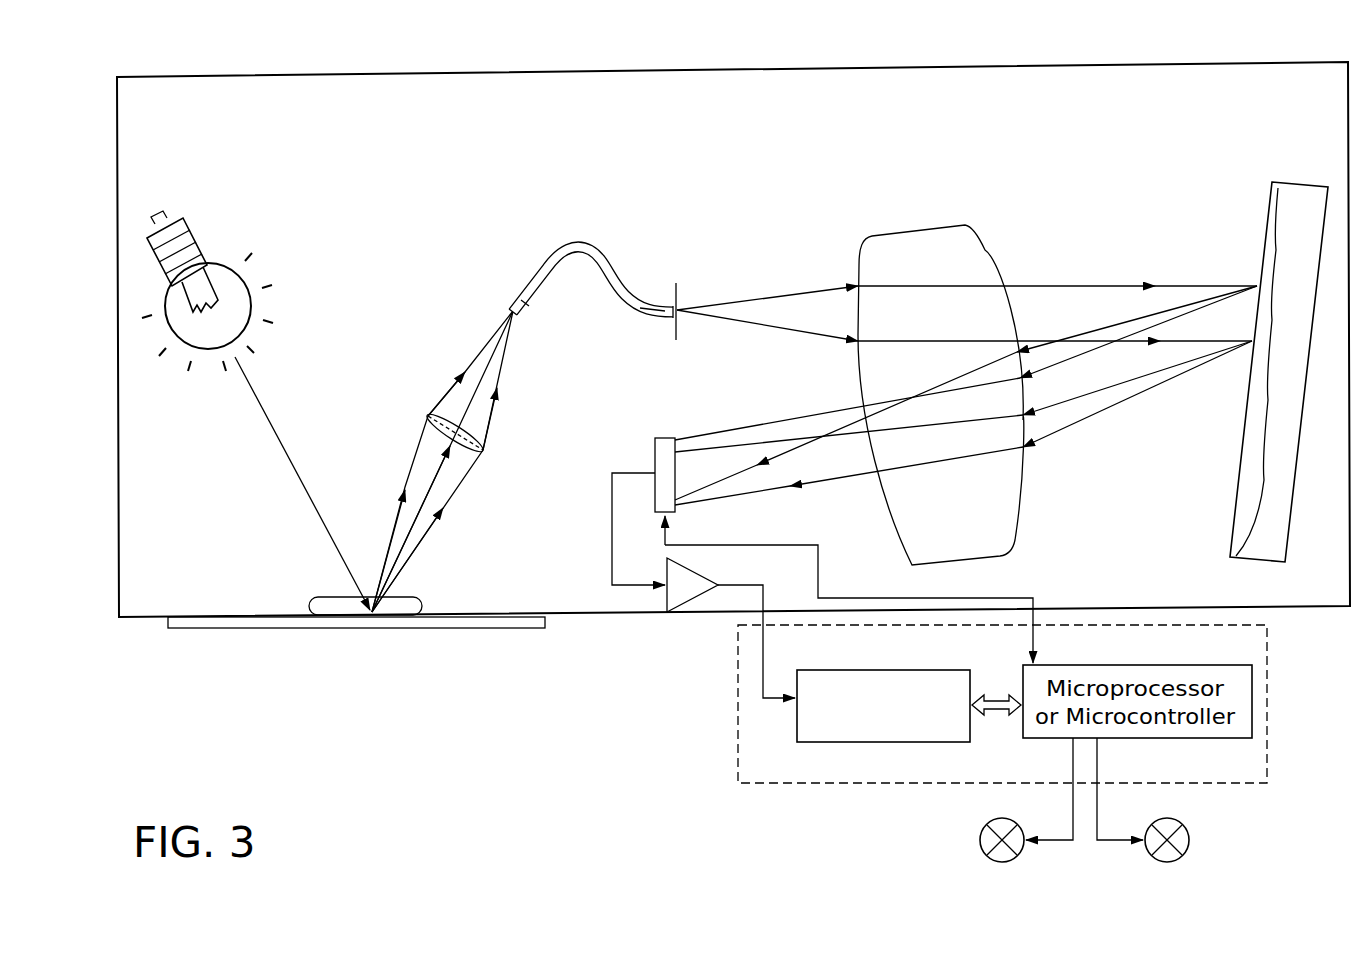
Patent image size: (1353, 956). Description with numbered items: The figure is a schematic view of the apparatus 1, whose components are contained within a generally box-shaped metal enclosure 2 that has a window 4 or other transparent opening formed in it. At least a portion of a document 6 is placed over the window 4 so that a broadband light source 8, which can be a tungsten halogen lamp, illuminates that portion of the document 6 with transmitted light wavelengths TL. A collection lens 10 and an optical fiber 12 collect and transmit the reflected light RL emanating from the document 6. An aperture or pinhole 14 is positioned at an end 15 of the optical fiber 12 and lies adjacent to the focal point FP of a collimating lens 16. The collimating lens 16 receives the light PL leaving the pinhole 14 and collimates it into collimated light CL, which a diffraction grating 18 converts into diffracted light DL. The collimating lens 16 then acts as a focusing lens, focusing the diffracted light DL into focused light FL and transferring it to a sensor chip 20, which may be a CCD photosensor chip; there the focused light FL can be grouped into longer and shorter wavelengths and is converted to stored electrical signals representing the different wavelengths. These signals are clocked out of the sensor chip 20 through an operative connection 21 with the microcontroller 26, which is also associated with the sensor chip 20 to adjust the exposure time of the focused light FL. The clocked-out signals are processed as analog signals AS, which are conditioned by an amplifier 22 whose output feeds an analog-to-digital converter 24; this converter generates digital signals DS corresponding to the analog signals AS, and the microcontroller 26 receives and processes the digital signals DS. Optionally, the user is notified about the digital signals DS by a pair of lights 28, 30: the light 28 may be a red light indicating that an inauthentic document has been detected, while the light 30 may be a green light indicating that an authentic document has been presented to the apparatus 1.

The apparatus 1 is at (555, 682).
The enclosure 2 is at (433, 72).
The window 4 is at (320, 616).
The document 6 is at (390, 628).
The broadband light source 8 is at (201, 236).
The collection lens 10 is at (430, 418).
The optical fiber 12 is at (546, 262).
The pinhole 14 is at (688, 308).
The end of the optical fiber 15 is at (631, 313).
The collimating lens 16 is at (1020, 535).
The diffraction grating 18 is at (1226, 548).
The sensor chip 20 is at (653, 457).
The operative connection 21 is at (862, 599).
The amplifier 22 is at (672, 613).
The analog-to-digital converter 24 is at (809, 744).
The microcontroller 26 is at (1253, 691).
The light 28 is at (980, 839).
The light 30 is at (1189, 832).
The transmitted light wavelengths TL is at (285, 459).
The reflected light RL is at (429, 532).
The focal point FP is at (674, 306).
The light from the pinhole PL is at (772, 291).
The collimated light CL is at (1092, 284).
The diffracted light DL is at (1111, 353).
The focused light FL is at (820, 482).
The analog signals AS is at (608, 520).
The digital signals DS is at (997, 700).